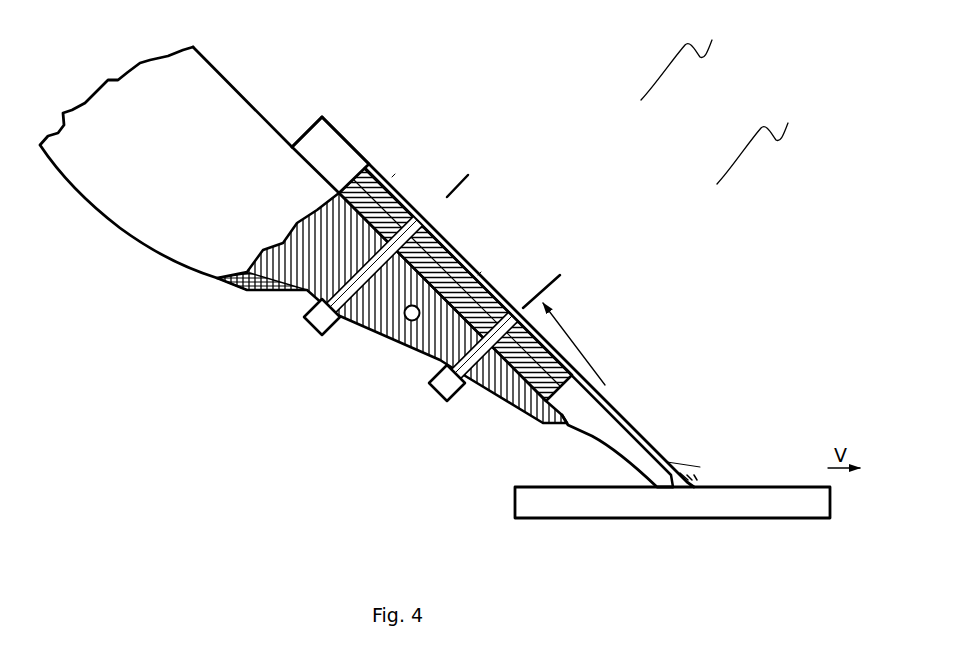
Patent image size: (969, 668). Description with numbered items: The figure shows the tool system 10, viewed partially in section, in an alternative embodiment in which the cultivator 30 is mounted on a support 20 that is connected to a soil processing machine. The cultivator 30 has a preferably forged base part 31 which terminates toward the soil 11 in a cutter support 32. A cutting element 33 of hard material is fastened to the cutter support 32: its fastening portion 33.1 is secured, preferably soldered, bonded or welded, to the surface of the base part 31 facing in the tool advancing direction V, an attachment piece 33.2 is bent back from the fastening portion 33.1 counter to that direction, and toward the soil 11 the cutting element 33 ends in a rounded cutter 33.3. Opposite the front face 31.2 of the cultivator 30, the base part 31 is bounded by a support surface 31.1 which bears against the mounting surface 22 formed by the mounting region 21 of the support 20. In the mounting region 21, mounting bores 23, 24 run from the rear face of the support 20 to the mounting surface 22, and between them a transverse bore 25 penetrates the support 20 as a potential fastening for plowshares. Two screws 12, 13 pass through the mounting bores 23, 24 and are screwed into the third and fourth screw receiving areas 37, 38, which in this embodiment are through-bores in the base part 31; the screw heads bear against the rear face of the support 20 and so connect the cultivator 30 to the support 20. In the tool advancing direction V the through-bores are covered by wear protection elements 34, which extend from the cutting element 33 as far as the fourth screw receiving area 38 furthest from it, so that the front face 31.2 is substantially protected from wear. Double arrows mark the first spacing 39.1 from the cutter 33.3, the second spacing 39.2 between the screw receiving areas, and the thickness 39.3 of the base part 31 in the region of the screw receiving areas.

The tool system 10 is at (681, 56).
The soil 11 is at (530, 491).
The screw 12 is at (320, 318).
The screw 13 is at (447, 390).
The support 20 is at (182, 92).
The mounting region 21 is at (270, 280).
The mounting surface 22 is at (318, 167).
The mounting bore 23 is at (320, 293).
The mounting bore 24 is at (443, 357).
The transverse bore 25 is at (410, 318).
The cultivator 30 is at (758, 143).
The base part 31 is at (463, 254).
The support surface 31.1 is at (293, 150).
The front face 31.2 is at (330, 122).
The cutter support 32 is at (680, 473).
The cutting element 33 is at (690, 481).
The fastening portion 33.1 is at (687, 475).
The attachment piece 33.2 is at (697, 474).
The cutter 33.3 is at (693, 486).
The wear protection elements 34 is at (700, 467).
The third screw receiving area 37 is at (533, 290).
The fourth screw receiving area 38 is at (448, 200).
The first spacing 39.1 is at (605, 385).
The second spacing 39.2 is at (478, 275).
The thickness 39.3 is at (392, 177).